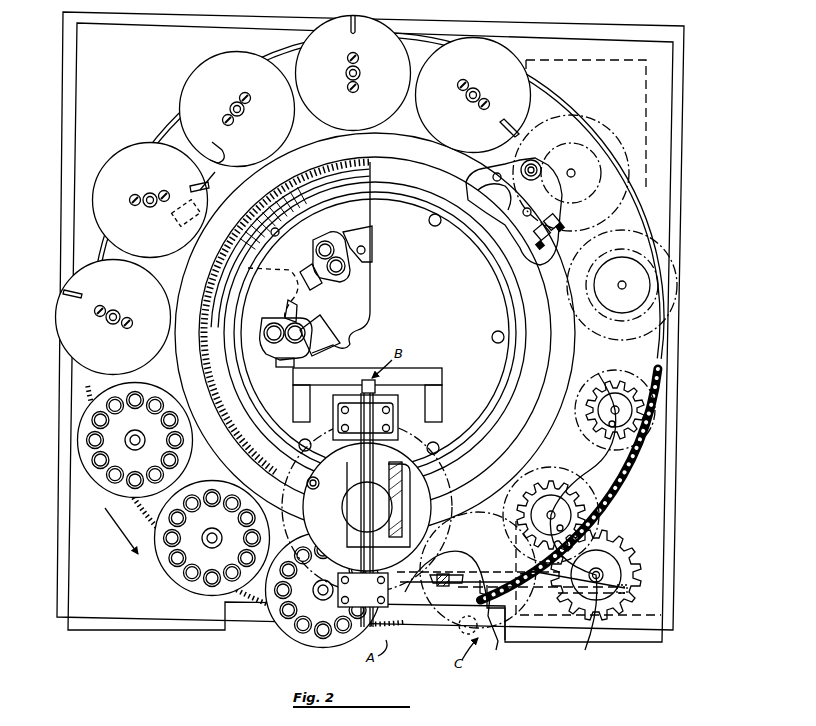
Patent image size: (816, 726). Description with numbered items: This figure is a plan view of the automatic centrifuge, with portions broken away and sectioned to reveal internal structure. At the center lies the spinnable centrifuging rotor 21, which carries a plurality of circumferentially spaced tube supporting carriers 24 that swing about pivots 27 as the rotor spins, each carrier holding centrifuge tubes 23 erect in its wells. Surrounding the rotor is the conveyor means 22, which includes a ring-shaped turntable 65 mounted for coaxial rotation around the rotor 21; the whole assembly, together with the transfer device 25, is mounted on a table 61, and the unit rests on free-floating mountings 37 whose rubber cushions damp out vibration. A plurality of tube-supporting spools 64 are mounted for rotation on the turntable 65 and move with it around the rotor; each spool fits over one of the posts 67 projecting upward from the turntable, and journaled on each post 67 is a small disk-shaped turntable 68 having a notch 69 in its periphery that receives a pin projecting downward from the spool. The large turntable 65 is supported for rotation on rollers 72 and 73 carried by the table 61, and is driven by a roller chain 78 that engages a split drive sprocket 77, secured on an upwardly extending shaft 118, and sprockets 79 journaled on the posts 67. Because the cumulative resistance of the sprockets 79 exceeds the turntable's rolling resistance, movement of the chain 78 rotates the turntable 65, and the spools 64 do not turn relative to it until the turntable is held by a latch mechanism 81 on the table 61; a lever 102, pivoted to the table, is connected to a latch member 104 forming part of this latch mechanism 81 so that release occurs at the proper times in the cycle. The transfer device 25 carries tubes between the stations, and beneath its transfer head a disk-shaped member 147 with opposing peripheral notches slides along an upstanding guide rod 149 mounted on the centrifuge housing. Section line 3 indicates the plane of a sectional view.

The section line 3- 3 is at (542, 463).
The centrifuging rotor 21 is at (357, 297).
The conveyor means 22 is at (66, 456).
The centrifuge tubes 23 is at (96, 432).
The tube supporting carriers 24 is at (325, 240).
The transfer device 25 is at (416, 412).
The pivots 27 is at (365, 323).
The free-floating mountings 37 is at (478, 190).
The table 61 is at (687, 116).
The tube-supporting spools 64 is at (92, 471).
The ring-shaped turntable 65 is at (311, 133).
The posts 67 is at (432, 596).
The disk-shaped turntable 68 is at (135, 143).
The notch 69 is at (219, 166).
The roller 72 is at (545, 238).
The roller 73 is at (523, 168).
The sprocket 77 is at (640, 566).
The roller chain 78 is at (627, 493).
The sprockets 79 is at (568, 486).
The latch mechanism 81 is at (452, 598).
The lever 102 is at (495, 636).
The latch member 104 is at (445, 575).
The shaft 118 is at (585, 630).
The disk-shaped member 147 is at (336, 526).
The guide rod 149 is at (316, 483).